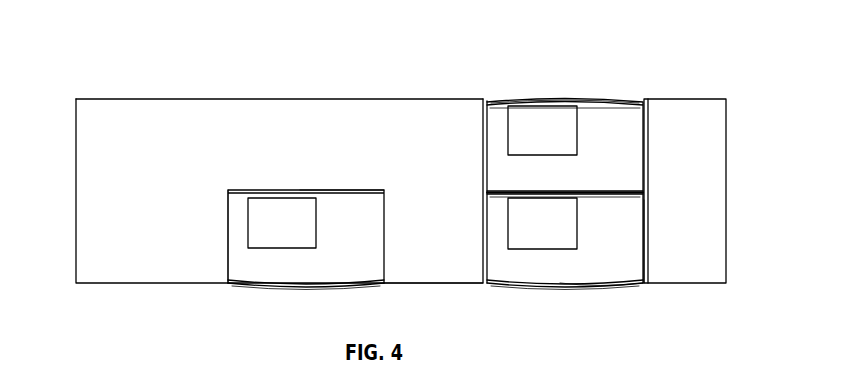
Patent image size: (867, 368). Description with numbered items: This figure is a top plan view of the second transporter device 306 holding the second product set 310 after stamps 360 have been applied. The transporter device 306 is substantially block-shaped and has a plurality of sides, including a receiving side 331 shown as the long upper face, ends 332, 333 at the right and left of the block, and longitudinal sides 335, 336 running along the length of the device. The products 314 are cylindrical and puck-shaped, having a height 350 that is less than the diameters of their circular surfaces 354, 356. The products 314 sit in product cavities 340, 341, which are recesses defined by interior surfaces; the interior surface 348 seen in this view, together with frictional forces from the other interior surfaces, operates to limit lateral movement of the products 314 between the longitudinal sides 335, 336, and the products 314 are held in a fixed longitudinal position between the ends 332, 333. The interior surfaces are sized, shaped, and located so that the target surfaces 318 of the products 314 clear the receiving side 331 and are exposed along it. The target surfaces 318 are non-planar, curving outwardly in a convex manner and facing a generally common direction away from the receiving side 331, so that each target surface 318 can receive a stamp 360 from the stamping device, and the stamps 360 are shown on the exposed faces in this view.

The second transporter device 306 is at (107, 64).
The second product set 310 is at (640, 70).
The products 314 is at (305, 290).
The target surfaces 318 is at (596, 95).
The receiving side 331 is at (177, 116).
The end 332 is at (728, 120).
The end 333 is at (61, 186).
The longitudinal side 335 is at (437, 305).
The longitudinal side 336 is at (413, 96).
The product cavity 340 is at (240, 295).
The product cavity 341 is at (650, 292).
The interior surface 348 is at (345, 195).
The height 350 is at (205, 190).
The circular surface 354 is at (596, 296).
The circular surface 356 is at (618, 186).
The stamp 360 is at (300, 200).